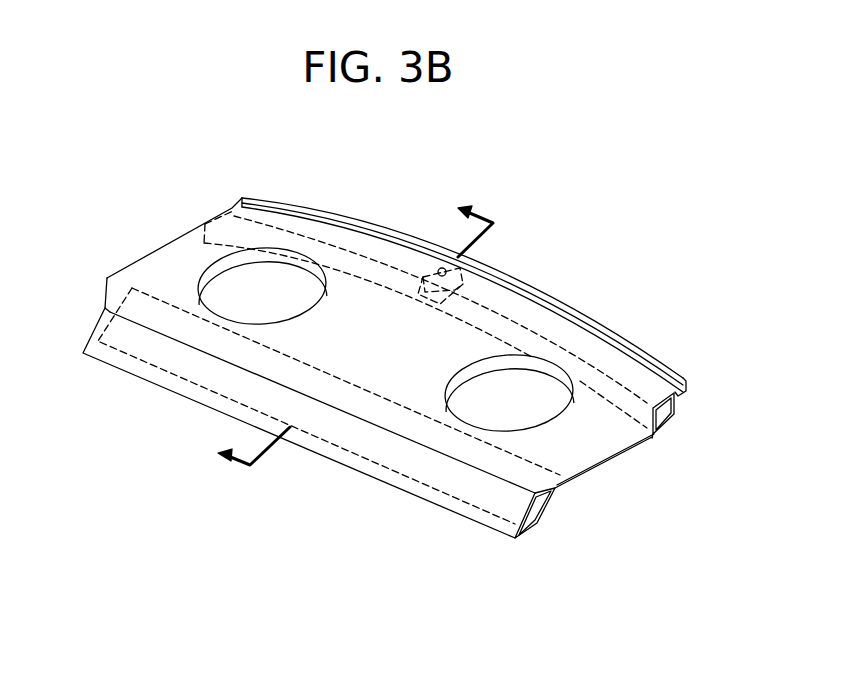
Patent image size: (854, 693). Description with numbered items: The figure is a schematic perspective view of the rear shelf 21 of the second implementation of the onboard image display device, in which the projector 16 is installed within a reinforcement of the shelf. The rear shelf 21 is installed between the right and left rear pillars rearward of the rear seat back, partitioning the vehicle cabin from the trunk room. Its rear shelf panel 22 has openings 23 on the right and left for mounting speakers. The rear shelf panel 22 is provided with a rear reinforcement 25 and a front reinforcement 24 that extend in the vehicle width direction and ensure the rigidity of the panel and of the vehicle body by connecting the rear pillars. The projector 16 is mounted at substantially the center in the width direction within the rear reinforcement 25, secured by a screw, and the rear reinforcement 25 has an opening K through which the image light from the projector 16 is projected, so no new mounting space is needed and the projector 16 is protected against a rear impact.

The projector 16 is at (510, 286).
The rear shelf 21 is at (384, 350).
The rear shelf panel 22 is at (162, 258).
The openings 23 is at (272, 320).
The front reinforcement 24 is at (552, 512).
The rear reinforcement 25 is at (660, 420).
The opening K is at (442, 237).